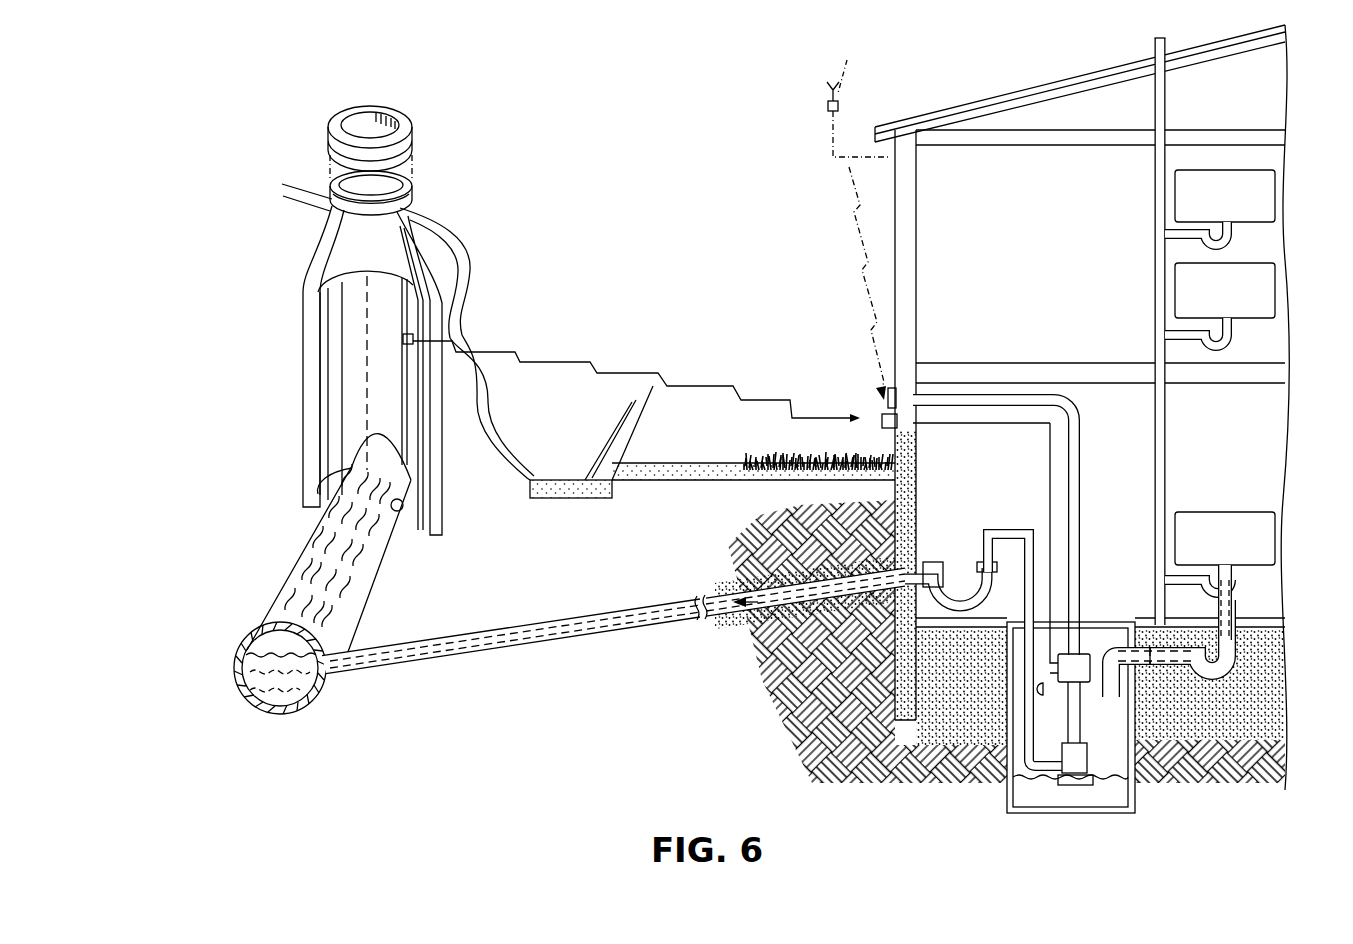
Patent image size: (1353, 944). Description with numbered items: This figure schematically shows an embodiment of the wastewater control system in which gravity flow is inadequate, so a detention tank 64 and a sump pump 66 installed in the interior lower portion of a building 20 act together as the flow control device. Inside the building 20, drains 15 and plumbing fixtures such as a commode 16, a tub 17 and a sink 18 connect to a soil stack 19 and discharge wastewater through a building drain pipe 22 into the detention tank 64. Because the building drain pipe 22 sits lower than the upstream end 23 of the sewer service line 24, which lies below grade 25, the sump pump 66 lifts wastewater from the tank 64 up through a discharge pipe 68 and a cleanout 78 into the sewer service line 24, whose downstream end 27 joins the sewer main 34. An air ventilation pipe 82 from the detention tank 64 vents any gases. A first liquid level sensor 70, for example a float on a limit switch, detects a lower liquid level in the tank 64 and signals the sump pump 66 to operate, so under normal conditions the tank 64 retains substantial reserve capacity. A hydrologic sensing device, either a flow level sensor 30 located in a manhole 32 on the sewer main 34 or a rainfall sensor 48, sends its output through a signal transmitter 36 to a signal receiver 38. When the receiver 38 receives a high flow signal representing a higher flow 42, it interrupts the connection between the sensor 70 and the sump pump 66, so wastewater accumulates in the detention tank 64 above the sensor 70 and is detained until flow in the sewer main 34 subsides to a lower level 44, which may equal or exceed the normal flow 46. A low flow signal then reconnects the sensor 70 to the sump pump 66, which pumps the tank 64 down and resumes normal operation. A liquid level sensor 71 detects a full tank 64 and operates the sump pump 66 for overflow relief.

The drains 15 is at (1234, 625).
The commode 16 is at (1275, 192).
The tub 17 is at (1275, 290).
The sink 18 is at (1275, 545).
The soil stack 19 is at (1167, 468).
The building 20 is at (895, 201).
The building drain pipe 22 is at (1210, 678).
The upstream end 23 is at (840, 584).
The sewer service line 24 is at (624, 611).
The grade 25 is at (834, 455).
The downstream end 27 is at (443, 654).
The flow level sensor 30 is at (408, 525).
The manhole 32 is at (302, 337).
The sewer main 34 is at (236, 664).
The signal transmitter 36 is at (828, 108).
The signal receiver 38 is at (880, 418).
The higher flow 42 is at (292, 650).
The lower level 44 is at (252, 690).
The normal flow 46 is at (268, 712).
The rainfall sensor 48 is at (853, 68).
The detention tank 64 is at (1070, 814).
The sump pump 66 is at (1085, 655).
The discharge pipe 68 is at (1017, 533).
The first liquid level sensor 70 is at (1090, 775).
The liquid level sensor 71 is at (1038, 692).
The cleanout 78 is at (958, 614).
The air ventilation pipe 82 is at (1082, 490).